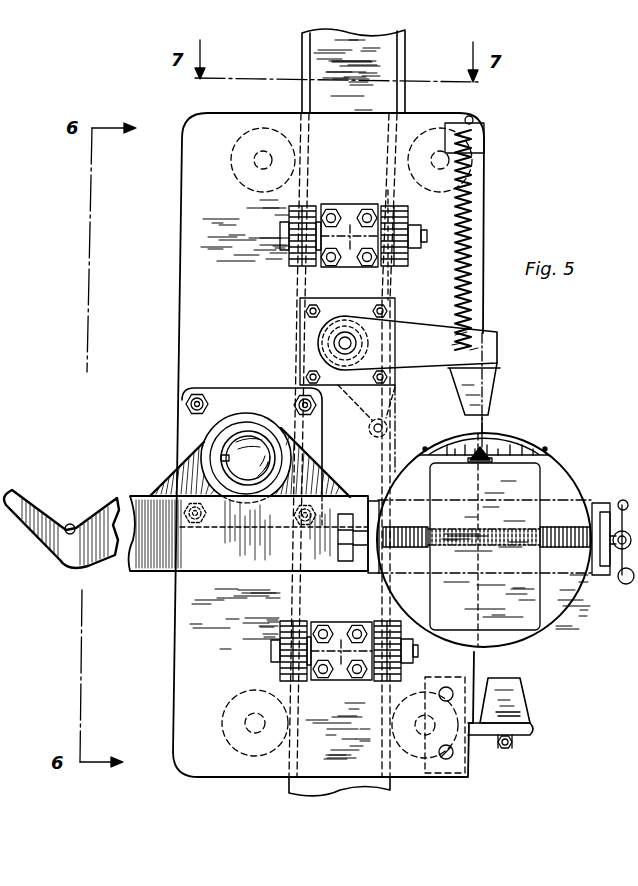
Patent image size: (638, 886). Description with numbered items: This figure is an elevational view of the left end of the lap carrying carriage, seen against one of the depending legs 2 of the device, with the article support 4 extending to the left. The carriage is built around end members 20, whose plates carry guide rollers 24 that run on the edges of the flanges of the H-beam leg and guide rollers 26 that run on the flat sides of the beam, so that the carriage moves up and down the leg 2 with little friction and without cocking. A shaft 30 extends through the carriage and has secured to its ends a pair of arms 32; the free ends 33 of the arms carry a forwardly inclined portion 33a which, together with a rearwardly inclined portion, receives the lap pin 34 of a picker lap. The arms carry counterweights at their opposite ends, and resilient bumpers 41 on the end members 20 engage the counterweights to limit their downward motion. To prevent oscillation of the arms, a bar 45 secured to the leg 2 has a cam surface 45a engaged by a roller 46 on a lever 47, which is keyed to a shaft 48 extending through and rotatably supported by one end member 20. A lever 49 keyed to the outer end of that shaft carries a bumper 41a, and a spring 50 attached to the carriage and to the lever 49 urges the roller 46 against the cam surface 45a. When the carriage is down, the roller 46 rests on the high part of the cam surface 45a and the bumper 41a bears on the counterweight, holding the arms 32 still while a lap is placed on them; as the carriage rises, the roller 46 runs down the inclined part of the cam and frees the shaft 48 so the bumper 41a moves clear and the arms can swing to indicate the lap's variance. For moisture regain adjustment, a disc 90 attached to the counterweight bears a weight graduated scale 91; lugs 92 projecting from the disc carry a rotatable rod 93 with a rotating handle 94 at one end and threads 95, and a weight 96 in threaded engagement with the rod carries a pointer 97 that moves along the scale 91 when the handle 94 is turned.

The legs 2 is at (384, 45).
The article support 4 is at (157, 575).
The end members 20 is at (485, 220).
The guide rollers 24 is at (392, 206).
The guide rollers 26 is at (265, 130).
The shaft 30 is at (248, 463).
The arms 32 is at (150, 505).
The ends 33 is at (70, 545).
The forwardly inclined portion 33a is at (33, 518).
The lap pin 34 is at (72, 527).
The resilient bumpers 41 is at (521, 700).
The bumper 41a is at (486, 392).
The bar 45 is at (386, 458).
The cam surface 45a is at (390, 185).
The roller 46 is at (386, 426).
The lever 47 is at (398, 402).
The shaft 48 is at (344, 344).
The lever 49 is at (408, 330).
The spring 50 is at (472, 176).
The disc 90 is at (562, 620).
The weight graduated scale 91 is at (522, 441).
The lugs 92 is at (595, 502).
The rod 93 is at (420, 548).
The handle 94 is at (623, 585).
The threads 95 is at (566, 527).
The weight 96 is at (468, 602).
The pointer 97 is at (488, 447).